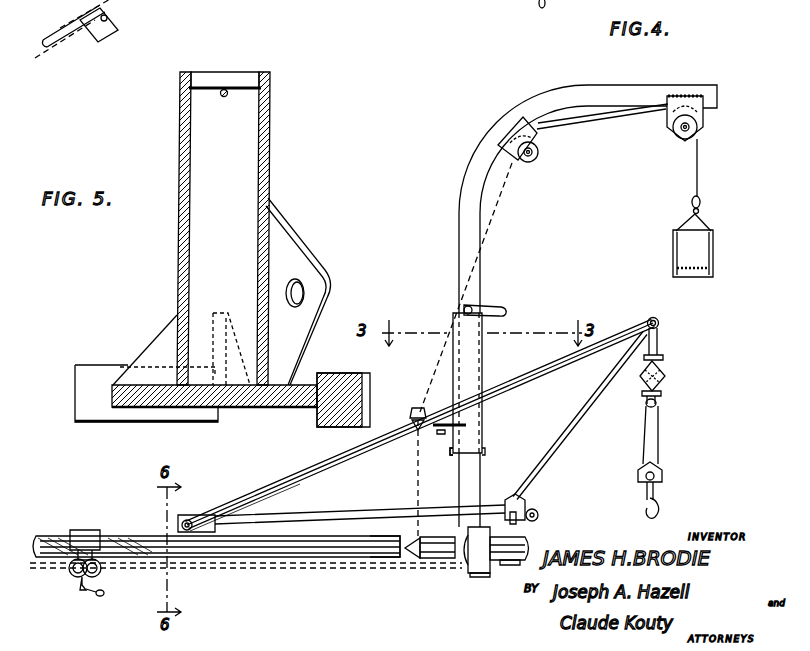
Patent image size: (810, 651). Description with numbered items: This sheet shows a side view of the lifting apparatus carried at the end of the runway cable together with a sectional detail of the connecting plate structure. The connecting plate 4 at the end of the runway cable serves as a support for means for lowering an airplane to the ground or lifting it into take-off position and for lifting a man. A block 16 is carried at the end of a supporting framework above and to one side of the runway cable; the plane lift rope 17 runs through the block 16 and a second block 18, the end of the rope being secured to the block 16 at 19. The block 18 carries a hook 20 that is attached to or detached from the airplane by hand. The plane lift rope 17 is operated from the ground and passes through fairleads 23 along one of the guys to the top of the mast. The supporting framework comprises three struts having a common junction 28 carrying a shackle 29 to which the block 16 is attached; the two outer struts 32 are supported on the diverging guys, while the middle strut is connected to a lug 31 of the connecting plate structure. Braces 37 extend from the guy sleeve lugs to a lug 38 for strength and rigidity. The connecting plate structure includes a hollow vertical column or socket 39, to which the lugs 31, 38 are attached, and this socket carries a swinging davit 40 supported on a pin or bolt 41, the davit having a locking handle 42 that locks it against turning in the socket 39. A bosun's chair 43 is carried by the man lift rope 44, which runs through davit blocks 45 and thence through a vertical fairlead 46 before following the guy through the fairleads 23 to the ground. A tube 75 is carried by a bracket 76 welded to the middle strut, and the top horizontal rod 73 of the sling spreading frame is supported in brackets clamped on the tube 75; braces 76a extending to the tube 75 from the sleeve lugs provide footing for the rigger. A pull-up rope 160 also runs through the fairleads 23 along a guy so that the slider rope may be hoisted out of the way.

In FIG. 5, the connecting plate 4 is at (244, 413).
In FIG. 4, the block 16 is at (666, 379).
In FIG. 4, the plane lift rope 17 is at (601, 426).
In FIG. 4, the second block 18 is at (663, 475).
In FIG. 4, the rope securing point 19 is at (649, 399).
In FIG. 4, the hook 20 is at (660, 513).
In FIG. 4, the fairleads 23 is at (100, 568).
In FIG. 4, the common junction 28 is at (660, 324).
In FIG. 4, the shackle 29 is at (660, 346).
In FIG. 5, the lug 31 is at (300, 254).
In FIG. 4, the outer struts 32 is at (294, 490).
In FIG. 4, the braces 37 is at (379, 455).
In FIG. 4, the lug 38 is at (447, 432).
In FIG. 5, the hollow vertical column or socket 39 is at (178, 240).
In FIG. 4, the hollow vertical column or socket 39 is at (462, 361).
In FIG. 5, the swinging davit 40 is at (237, 78).
In FIG. 4, the swinging davit 40 is at (461, 220).
In FIG. 5, the pin or bolt 41 is at (223, 98).
In FIG. 4, the pin or bolt 41 is at (484, 447).
In FIG. 4, the locking handle 42 is at (491, 309).
In FIG. 4, the bosun's chair 43 is at (694, 278).
In FIG. 4, the man lift rope 44 is at (489, 228).
In FIG. 4, the davit blocks 45 is at (528, 165).
In FIG. 4, the vertical fairlead 46 is at (413, 412).
In FIG. 4, the top horizontal rod 73 is at (540, 516).
In FIG. 4, the tube 75 is at (526, 524).
In FIG. 4, the bracket 76 is at (527, 506).
In FIG. 4, the braces 76a is at (318, 513).
In FIG. 4, the pull-up rope 160 is at (80, 585).